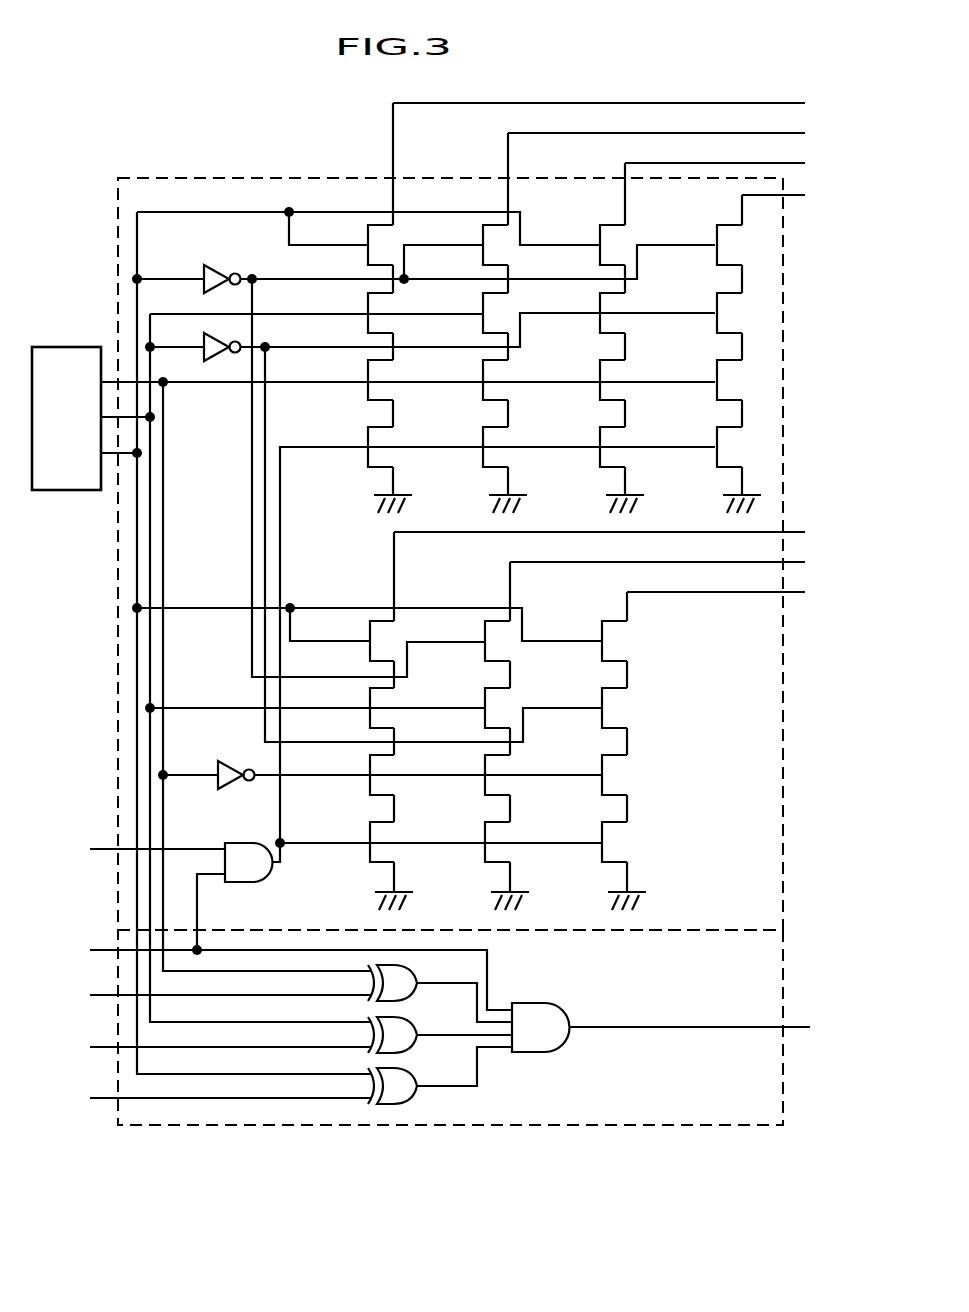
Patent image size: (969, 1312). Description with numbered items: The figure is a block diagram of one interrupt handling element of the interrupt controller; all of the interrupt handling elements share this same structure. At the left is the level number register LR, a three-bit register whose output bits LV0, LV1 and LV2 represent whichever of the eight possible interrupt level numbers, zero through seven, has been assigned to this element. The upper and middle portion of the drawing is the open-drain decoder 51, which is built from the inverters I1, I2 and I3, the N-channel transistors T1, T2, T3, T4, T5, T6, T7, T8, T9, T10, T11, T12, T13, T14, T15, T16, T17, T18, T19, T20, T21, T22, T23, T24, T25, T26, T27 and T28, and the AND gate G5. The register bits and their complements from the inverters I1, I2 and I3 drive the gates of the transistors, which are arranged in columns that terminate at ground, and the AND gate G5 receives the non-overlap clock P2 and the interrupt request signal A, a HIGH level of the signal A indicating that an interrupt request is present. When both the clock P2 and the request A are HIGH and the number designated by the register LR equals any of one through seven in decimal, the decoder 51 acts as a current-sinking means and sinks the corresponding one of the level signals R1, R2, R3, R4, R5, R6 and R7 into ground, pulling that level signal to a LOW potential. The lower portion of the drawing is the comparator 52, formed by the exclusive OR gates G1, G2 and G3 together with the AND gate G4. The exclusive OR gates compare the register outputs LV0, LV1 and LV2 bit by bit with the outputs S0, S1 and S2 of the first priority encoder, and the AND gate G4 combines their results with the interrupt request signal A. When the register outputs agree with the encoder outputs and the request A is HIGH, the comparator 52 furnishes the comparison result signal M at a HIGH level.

The N-channel transistor T1 is at (587, 858).
The N-channel transistor T2 is at (587, 791).
The N-channel transistor T3 is at (587, 724).
The N-channel transistor T4 is at (587, 657).
The N-channel transistor T5 is at (470, 858).
The N-channel transistor T6 is at (470, 791).
The N-channel transistor T7 is at (470, 724).
The N-channel transistor T8 is at (470, 657).
The N-channel transistor T9 is at (357, 858).
The N-channel transistor T10 is at (357, 791).
The N-channel transistor T11 is at (357, 724).
The N-channel transistor T12 is at (357, 657).
The N-channel transistor T13 is at (707, 463).
The N-channel transistor T14 is at (707, 396).
The N-channel transistor T15 is at (707, 329).
The N-channel transistor T16 is at (707, 261).
The N-channel transistor T17 is at (589, 463).
The N-channel transistor T18 is at (589, 396).
The N-channel transistor T19 is at (589, 329).
The N-channel transistor T20 is at (589, 261).
The N-channel transistor T21 is at (472, 463).
The N-channel transistor T22 is at (472, 396).
The N-channel transistor T23 is at (472, 329).
The N-channel transistor T24 is at (472, 261).
The N-channel transistor T25 is at (357, 463).
The N-channel transistor T26 is at (357, 396).
The N-channel transistor T27 is at (357, 329).
The N-channel transistor T28 is at (357, 261).
The inverter I1 is at (213, 791).
The inverter I2 is at (200, 333).
The inverter I3 is at (200, 268).
The exclusive OR gate G1 is at (415, 1079).
The exclusive OR gate G2 is at (415, 1027).
The exclusive OR gate G3 is at (415, 975).
The AND gate G4 is at (541, 1003).
The AND gate G5 is at (247, 843).
The level number register LR is at (68, 347).
The level number register output bit LV0 is at (66, 453).
The level number register output bit LV1 is at (66, 417).
The level number register output bit LV2 is at (66, 382).
The open-drain decoder 51 is at (786, 911).
The comparator 52 is at (786, 1107).
The level signal R1 is at (735, 594).
The level signal R2 is at (676, 564).
The level signal R3 is at (618, 534).
The level signal R4 is at (792, 197).
The level signal R5 is at (734, 165).
The level signal R6 is at (675, 135).
The level signal R7 is at (618, 105).
The non-overlap clock P2 is at (69, 850).
The interrupt request signal A is at (73, 951).
The priority encoder output S0 is at (59, 1099).
The priority encoder output S1 is at (59, 1048).
The priority encoder output S2 is at (59, 996).
The comparison result signal M is at (825, 1029).